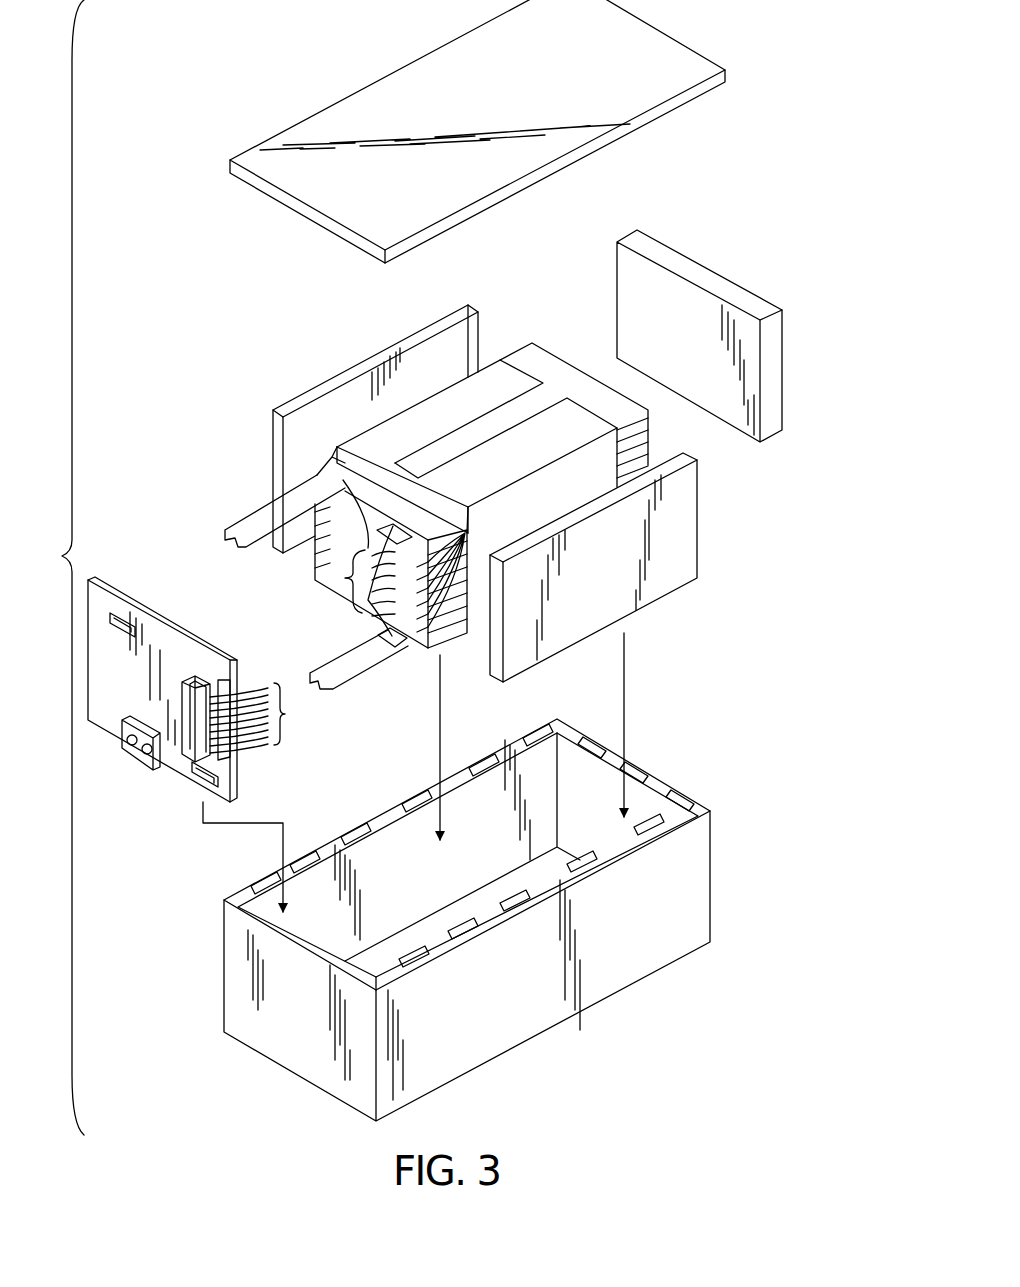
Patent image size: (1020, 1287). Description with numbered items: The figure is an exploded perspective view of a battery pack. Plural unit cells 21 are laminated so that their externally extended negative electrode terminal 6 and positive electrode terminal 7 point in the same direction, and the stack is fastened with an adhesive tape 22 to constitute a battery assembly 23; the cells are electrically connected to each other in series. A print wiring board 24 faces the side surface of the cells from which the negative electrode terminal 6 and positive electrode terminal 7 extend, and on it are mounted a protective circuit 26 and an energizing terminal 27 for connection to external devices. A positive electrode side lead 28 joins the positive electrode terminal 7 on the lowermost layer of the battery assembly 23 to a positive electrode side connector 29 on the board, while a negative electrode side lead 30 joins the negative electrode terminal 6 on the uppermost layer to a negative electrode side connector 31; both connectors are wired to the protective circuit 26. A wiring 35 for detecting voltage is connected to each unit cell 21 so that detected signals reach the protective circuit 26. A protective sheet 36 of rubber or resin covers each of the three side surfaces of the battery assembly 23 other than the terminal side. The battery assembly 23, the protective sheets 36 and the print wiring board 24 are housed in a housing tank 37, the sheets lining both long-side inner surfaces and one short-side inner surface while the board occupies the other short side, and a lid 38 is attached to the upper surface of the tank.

The negative electrode terminal 6 is at (330, 472).
The positive electrode terminal 7 is at (402, 538).
The unit cell 21 is at (649, 418).
The adhesive tape 22 is at (558, 432).
The battery assembly 23 is at (533, 469).
The print wiring board 24 is at (121, 585).
The protective circuit 26 is at (198, 690).
The energizing terminal 27 is at (146, 760).
The positive electrode side lead 28 is at (372, 683).
The positive electrode side connector 29 is at (218, 781).
The negative electrode side lead 30 is at (236, 522).
The negative electrode side connector 31 is at (130, 620).
The wiring for detecting voltage 35 is at (344, 578).
The protective sheet 36 is at (345, 386).
The housing tank 37 is at (698, 880).
The lid 38 is at (665, 55).